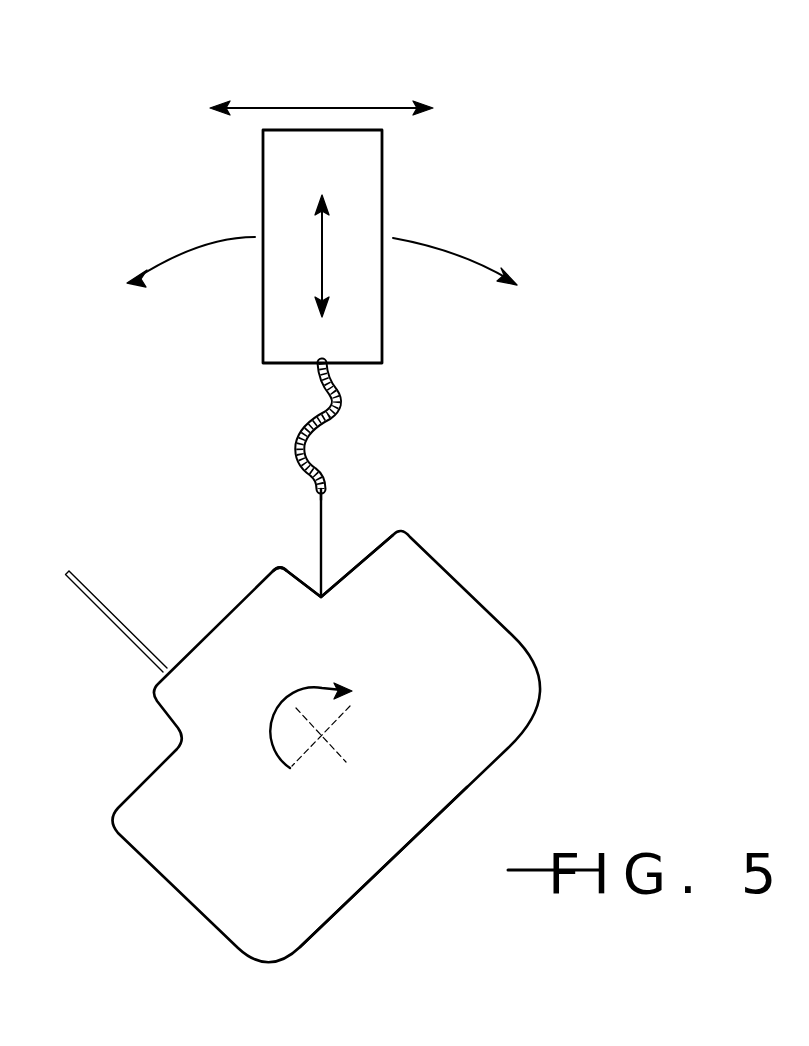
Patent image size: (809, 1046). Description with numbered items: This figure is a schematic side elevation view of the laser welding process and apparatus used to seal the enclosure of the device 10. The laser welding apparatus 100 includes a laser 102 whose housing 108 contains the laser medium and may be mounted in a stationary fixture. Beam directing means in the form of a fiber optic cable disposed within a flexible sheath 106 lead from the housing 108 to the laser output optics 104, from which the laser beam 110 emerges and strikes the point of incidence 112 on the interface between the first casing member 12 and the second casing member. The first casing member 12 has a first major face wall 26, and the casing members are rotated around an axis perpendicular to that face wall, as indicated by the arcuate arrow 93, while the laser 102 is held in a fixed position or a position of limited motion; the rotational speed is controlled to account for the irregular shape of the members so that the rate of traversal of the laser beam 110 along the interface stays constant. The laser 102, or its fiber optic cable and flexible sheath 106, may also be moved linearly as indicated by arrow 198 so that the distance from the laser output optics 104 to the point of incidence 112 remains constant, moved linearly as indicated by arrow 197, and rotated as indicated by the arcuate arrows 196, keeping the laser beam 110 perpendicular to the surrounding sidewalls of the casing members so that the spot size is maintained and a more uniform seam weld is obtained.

The device 10 is at (423, 738).
The first casing member 12 is at (467, 787).
The first major face wall 26 is at (330, 883).
The arcuate arrow 93 is at (303, 688).
The laser welding apparatus 100 is at (336, 216).
The laser 102 is at (323, 241).
The laser output optics 104 is at (324, 490).
The flexible sheath 106 is at (343, 405).
The housing 108 is at (263, 167).
The laser beam 110 is at (318, 547).
The point of incidence 112 is at (323, 590).
The arcuate arrows 196 is at (203, 252).
The arrow 197 is at (348, 107).
The arrow 198 is at (322, 241).